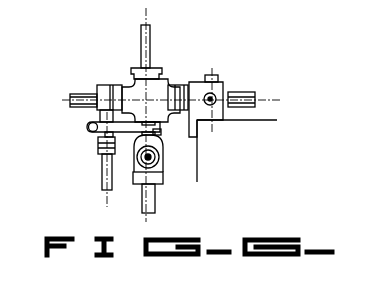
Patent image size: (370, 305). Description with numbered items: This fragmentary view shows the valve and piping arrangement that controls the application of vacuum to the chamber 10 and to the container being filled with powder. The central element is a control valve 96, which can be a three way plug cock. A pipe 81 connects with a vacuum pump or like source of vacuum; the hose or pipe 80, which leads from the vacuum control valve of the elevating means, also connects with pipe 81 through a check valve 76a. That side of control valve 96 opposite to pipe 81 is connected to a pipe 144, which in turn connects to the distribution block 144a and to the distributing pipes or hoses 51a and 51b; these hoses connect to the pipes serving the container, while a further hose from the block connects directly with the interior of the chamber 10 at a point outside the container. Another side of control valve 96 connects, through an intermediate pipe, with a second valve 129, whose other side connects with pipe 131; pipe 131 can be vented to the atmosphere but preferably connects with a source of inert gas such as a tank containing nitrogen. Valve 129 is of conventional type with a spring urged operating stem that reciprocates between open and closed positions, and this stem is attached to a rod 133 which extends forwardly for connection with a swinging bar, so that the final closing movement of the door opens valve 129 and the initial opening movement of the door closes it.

The chamber 10 is at (261, 120).
The distributing pipe or hose 51a is at (212, 105).
The distributing pipe or hose 51b is at (241, 92).
The check valve 76a is at (98, 141).
The hose or pipe 80 is at (102, 180).
The pipe 81 is at (76, 94).
The control valve 96 is at (129, 84).
The second valve 129 is at (165, 171).
The pipe 131 is at (155, 201).
The rod 133 is at (165, 156).
The pipe 144 is at (185, 91).
The distribution block 144a is at (201, 82).